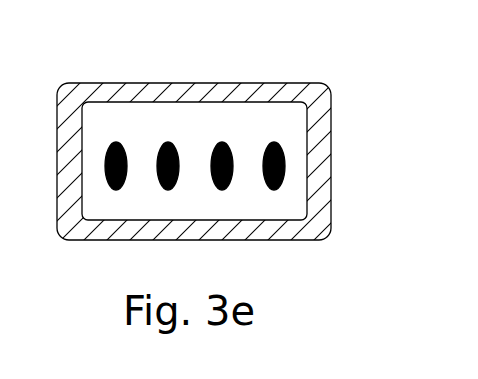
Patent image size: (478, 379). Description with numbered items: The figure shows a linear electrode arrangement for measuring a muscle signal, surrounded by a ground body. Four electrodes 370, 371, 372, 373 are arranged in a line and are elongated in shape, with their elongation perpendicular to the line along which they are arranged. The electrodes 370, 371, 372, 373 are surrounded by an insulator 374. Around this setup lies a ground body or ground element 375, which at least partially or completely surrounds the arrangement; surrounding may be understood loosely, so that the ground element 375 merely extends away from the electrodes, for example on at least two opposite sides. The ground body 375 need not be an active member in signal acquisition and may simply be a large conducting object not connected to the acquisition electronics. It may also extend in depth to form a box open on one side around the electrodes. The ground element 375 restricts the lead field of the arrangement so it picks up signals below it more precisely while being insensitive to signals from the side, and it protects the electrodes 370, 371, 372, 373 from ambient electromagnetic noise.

The electrode 370 is at (116, 142).
The electrode 371 is at (168, 142).
The electrode 372 is at (222, 141).
The electrode 373 is at (275, 141).
The insulator 374 is at (298, 131).
The ground body 375 is at (315, 197).